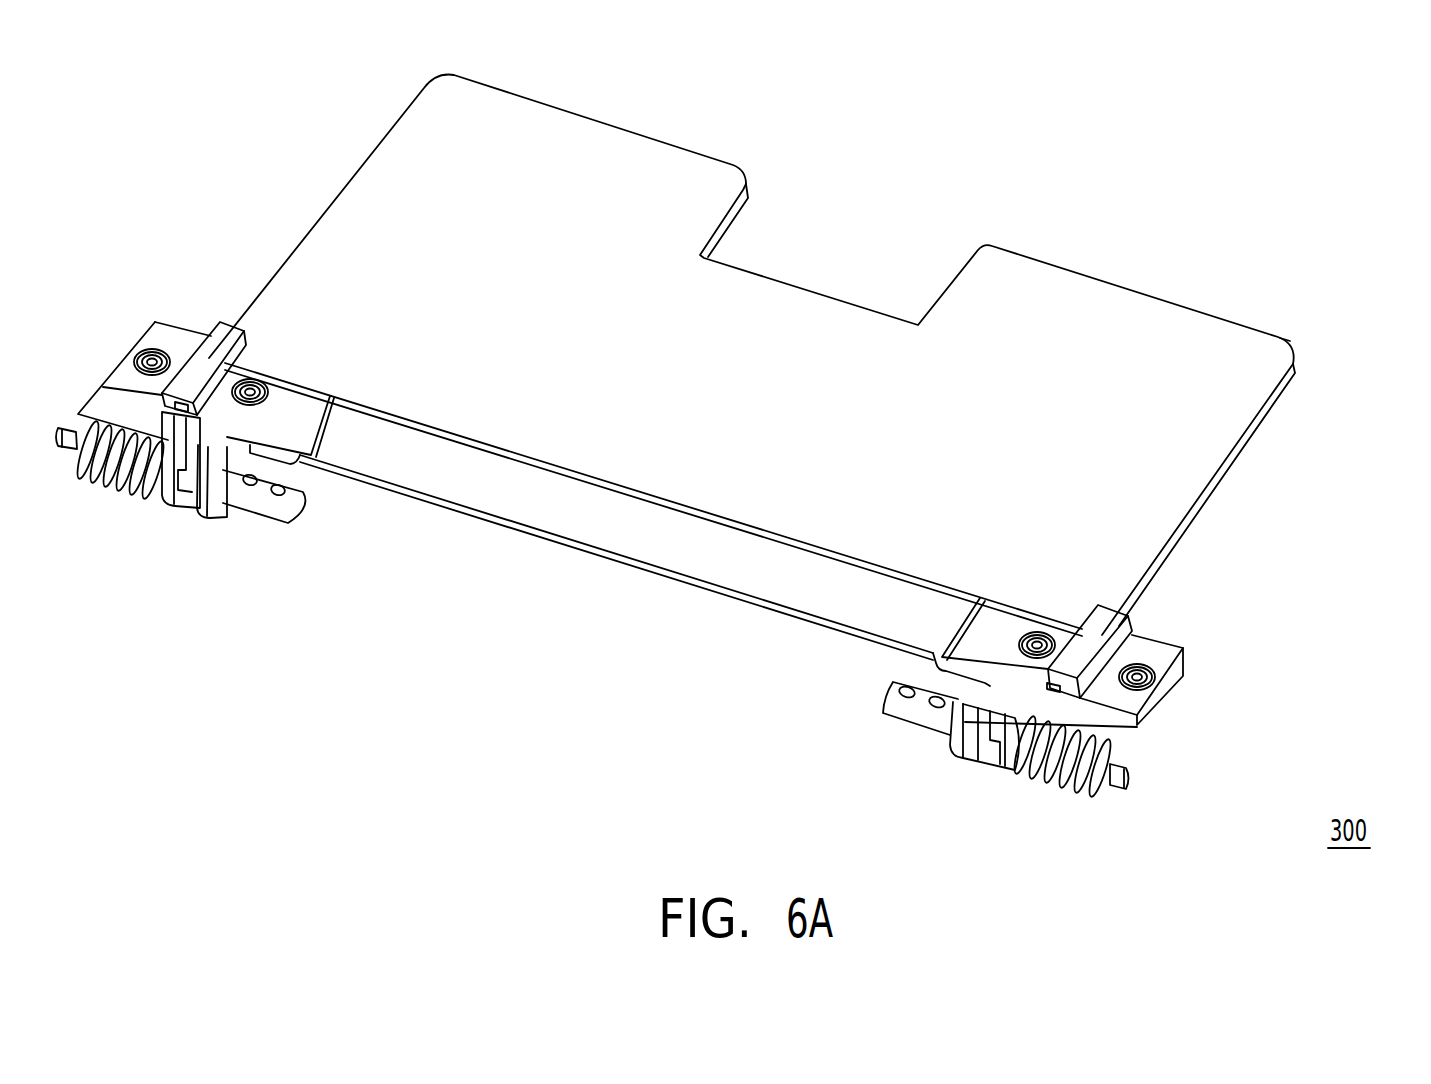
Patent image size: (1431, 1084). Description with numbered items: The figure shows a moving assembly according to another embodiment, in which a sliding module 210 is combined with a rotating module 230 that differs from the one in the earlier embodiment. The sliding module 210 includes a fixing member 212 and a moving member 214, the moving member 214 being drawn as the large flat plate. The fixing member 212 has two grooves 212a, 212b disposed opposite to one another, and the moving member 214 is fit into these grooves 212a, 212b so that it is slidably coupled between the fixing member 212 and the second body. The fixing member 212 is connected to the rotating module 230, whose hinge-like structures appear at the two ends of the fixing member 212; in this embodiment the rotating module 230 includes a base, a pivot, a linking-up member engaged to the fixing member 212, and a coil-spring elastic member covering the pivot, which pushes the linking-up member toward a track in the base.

The sliding module 210 is at (1360, 463).
The fixing member 212 is at (1187, 660).
The moving member 214 is at (1153, 415).
The groove 212a is at (1050, 689).
The groove 212b is at (183, 410).
The rotating module 230 is at (937, 780).